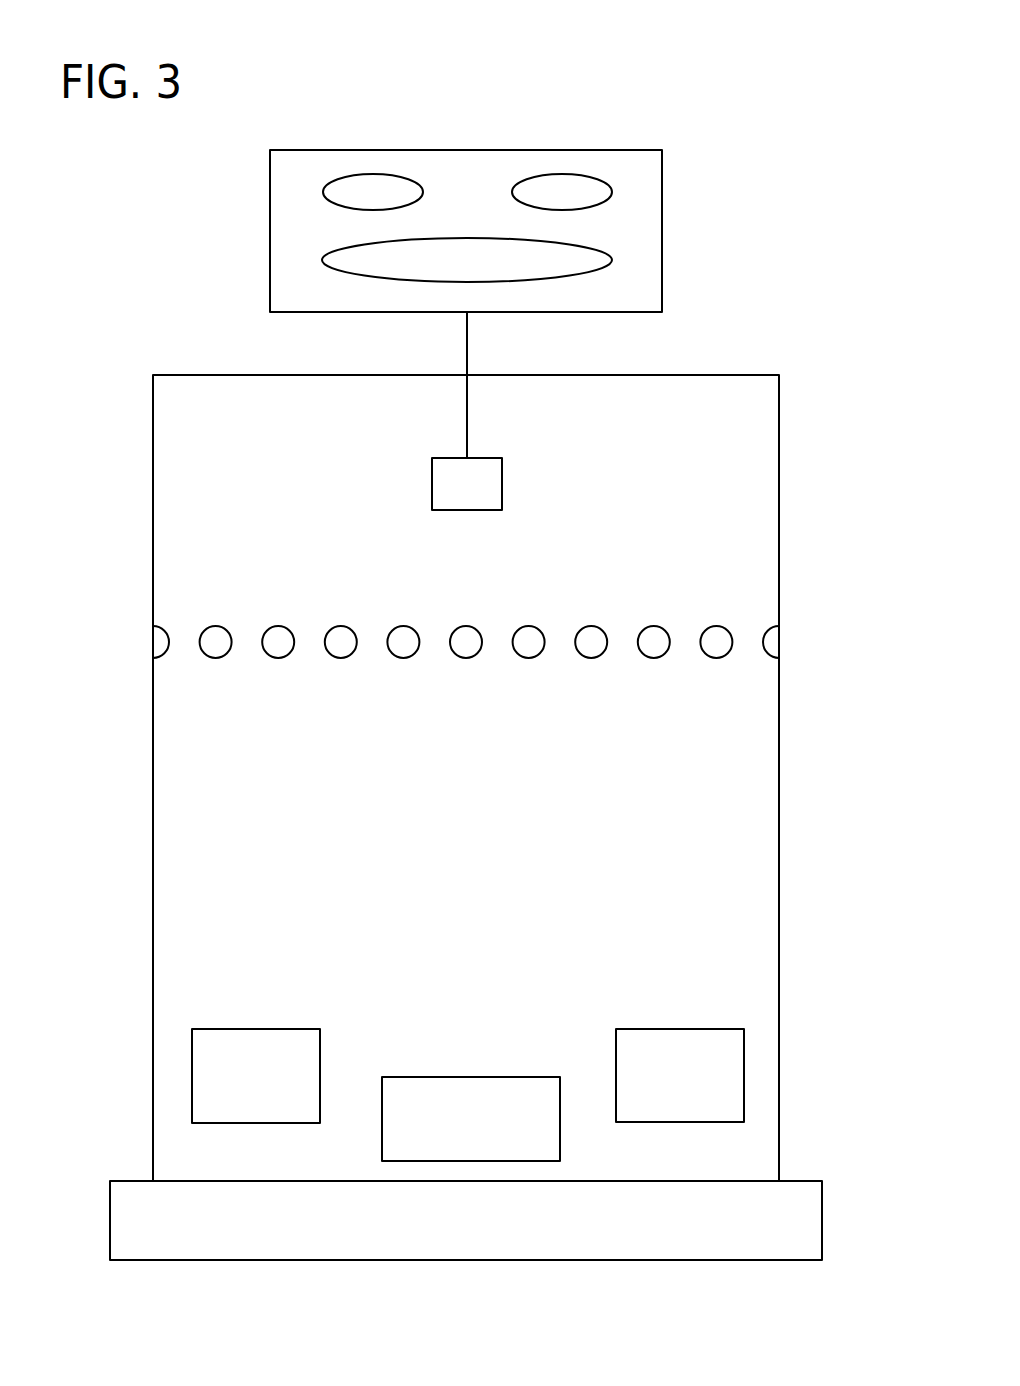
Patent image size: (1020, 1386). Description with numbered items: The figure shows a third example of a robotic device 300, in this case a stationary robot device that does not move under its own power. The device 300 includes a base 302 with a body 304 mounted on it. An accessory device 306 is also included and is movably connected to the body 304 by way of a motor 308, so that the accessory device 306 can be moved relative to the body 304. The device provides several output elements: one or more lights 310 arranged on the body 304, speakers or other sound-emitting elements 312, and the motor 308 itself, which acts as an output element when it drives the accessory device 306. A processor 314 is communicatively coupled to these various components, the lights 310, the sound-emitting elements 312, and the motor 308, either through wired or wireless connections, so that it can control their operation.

The robotic device 300 is at (482, 106).
The base 302 is at (792, 1228).
The body 304 is at (779, 492).
The accessory device 306 is at (637, 172).
The motor 308 is at (502, 485).
The lights 310 is at (773, 642).
The sound-emitting elements 312 is at (243, 1078).
The processor 314 is at (500, 1077).